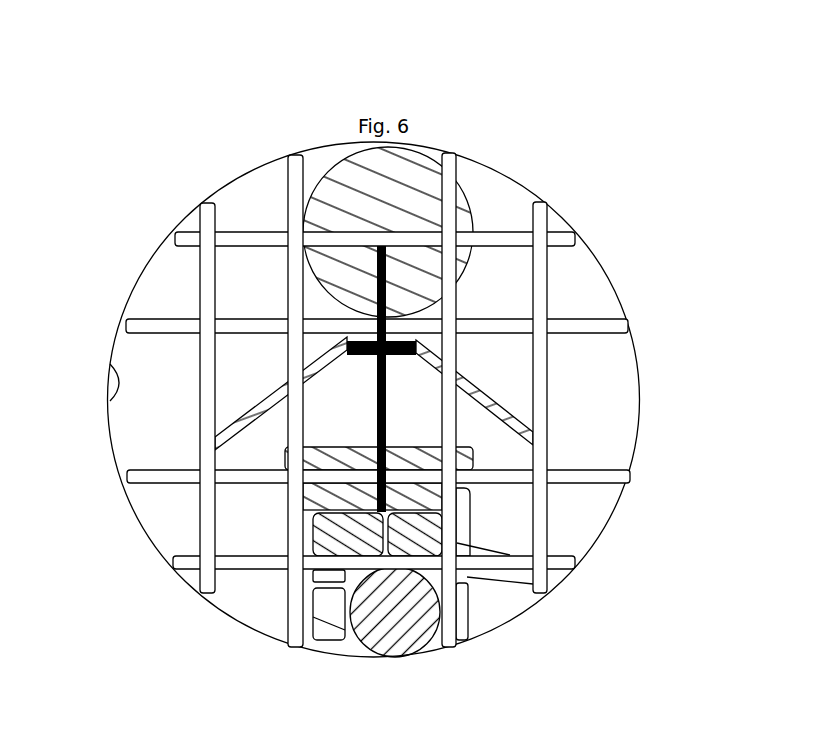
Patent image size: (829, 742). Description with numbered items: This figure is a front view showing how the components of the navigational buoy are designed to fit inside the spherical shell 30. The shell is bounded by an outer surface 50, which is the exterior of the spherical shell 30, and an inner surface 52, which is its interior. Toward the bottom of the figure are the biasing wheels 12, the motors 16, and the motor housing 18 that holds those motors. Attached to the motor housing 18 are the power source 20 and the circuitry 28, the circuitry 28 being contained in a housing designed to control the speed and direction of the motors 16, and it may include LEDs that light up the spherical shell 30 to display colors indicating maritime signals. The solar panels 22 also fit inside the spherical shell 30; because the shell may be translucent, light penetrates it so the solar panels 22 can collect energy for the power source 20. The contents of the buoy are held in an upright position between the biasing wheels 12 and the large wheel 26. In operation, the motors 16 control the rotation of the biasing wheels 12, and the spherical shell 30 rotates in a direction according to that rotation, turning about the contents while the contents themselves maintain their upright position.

The biasing wheel 12 is at (398, 627).
The motor 16 is at (310, 580).
The motor housing 18 is at (575, 568).
The power source 20 is at (305, 500).
The solar panel 22 is at (557, 433).
The large wheel 26 is at (480, 228).
The circuitry 28 is at (473, 452).
The spherical shell 30 is at (495, 178).
The outer surface 50 is at (145, 270).
The inner surface 52 is at (107, 398).